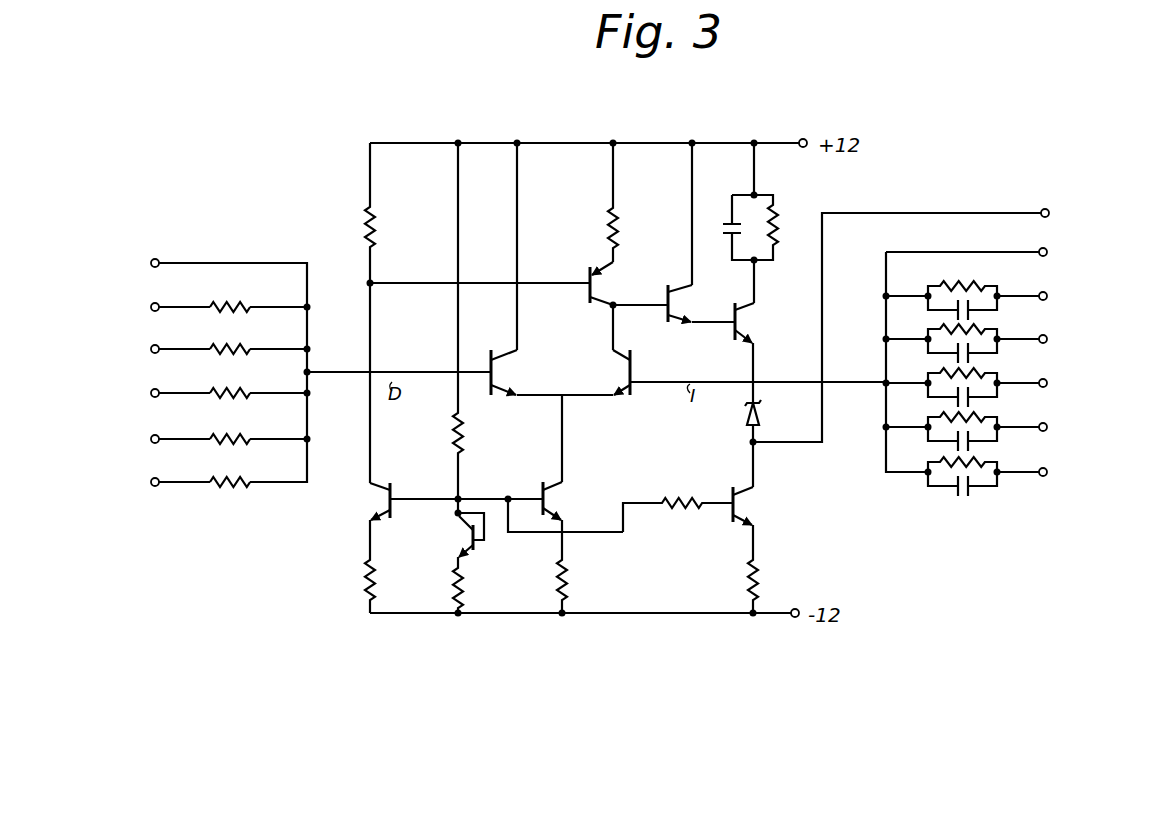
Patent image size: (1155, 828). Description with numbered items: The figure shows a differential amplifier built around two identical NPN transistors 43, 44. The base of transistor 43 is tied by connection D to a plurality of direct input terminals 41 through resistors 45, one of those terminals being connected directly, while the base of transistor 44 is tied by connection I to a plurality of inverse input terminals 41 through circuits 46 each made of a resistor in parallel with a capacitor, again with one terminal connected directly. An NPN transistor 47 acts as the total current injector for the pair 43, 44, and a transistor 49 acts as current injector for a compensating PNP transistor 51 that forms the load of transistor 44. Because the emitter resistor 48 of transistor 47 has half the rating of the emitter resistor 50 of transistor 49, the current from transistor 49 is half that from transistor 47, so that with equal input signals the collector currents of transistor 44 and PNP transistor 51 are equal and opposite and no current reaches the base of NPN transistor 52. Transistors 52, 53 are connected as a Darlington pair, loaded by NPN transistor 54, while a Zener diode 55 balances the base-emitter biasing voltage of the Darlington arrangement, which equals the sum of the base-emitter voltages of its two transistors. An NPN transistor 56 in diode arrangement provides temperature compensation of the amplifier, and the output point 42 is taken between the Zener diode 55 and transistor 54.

The input terminals 41 is at (1058, 472).
The output point 42 is at (1050, 215).
The NPN transistor 43 is at (494, 368).
The NPN transistor 44 is at (624, 382).
The resistors 45 is at (200, 479).
The resistor and capacitor in parallel circuits 46 is at (980, 461).
The NPN transistor 47 is at (546, 500).
The resistor 48 is at (566, 578).
The transistor 49 is at (387, 500).
The resistor 50 is at (373, 578).
The compensating PNP transistor 51 is at (592, 289).
The NPN transistor 52 is at (671, 308).
The NPN transistor 53 is at (738, 324).
The NPN transistor 54 is at (736, 506).
The Zener diode 55 is at (758, 412).
The NPN transistor in diode arrangement 56 is at (456, 543).